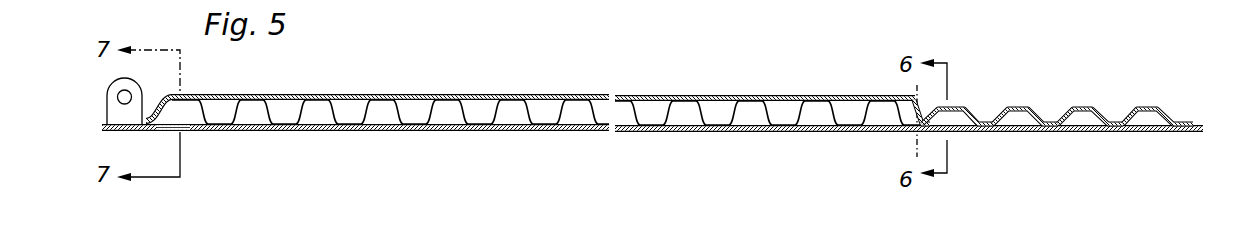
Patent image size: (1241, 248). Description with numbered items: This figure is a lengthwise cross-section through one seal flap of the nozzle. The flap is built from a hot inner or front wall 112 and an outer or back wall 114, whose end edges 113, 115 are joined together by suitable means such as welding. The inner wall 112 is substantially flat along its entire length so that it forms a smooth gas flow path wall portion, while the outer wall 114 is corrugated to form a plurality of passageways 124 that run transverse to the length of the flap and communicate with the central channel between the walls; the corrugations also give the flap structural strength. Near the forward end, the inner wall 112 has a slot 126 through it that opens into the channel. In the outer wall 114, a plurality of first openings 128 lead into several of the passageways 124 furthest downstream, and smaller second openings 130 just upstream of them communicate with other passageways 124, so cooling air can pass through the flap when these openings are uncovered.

The inner wall 112 is at (430, 132).
The end edge 113 is at (100, 127).
The outer wall 114 is at (423, 97).
The end edge 115 is at (104, 120).
The passageways 124 is at (995, 108).
The slot 126 is at (177, 132).
The first openings 128 is at (1016, 107).
The second openings 130 is at (768, 62).